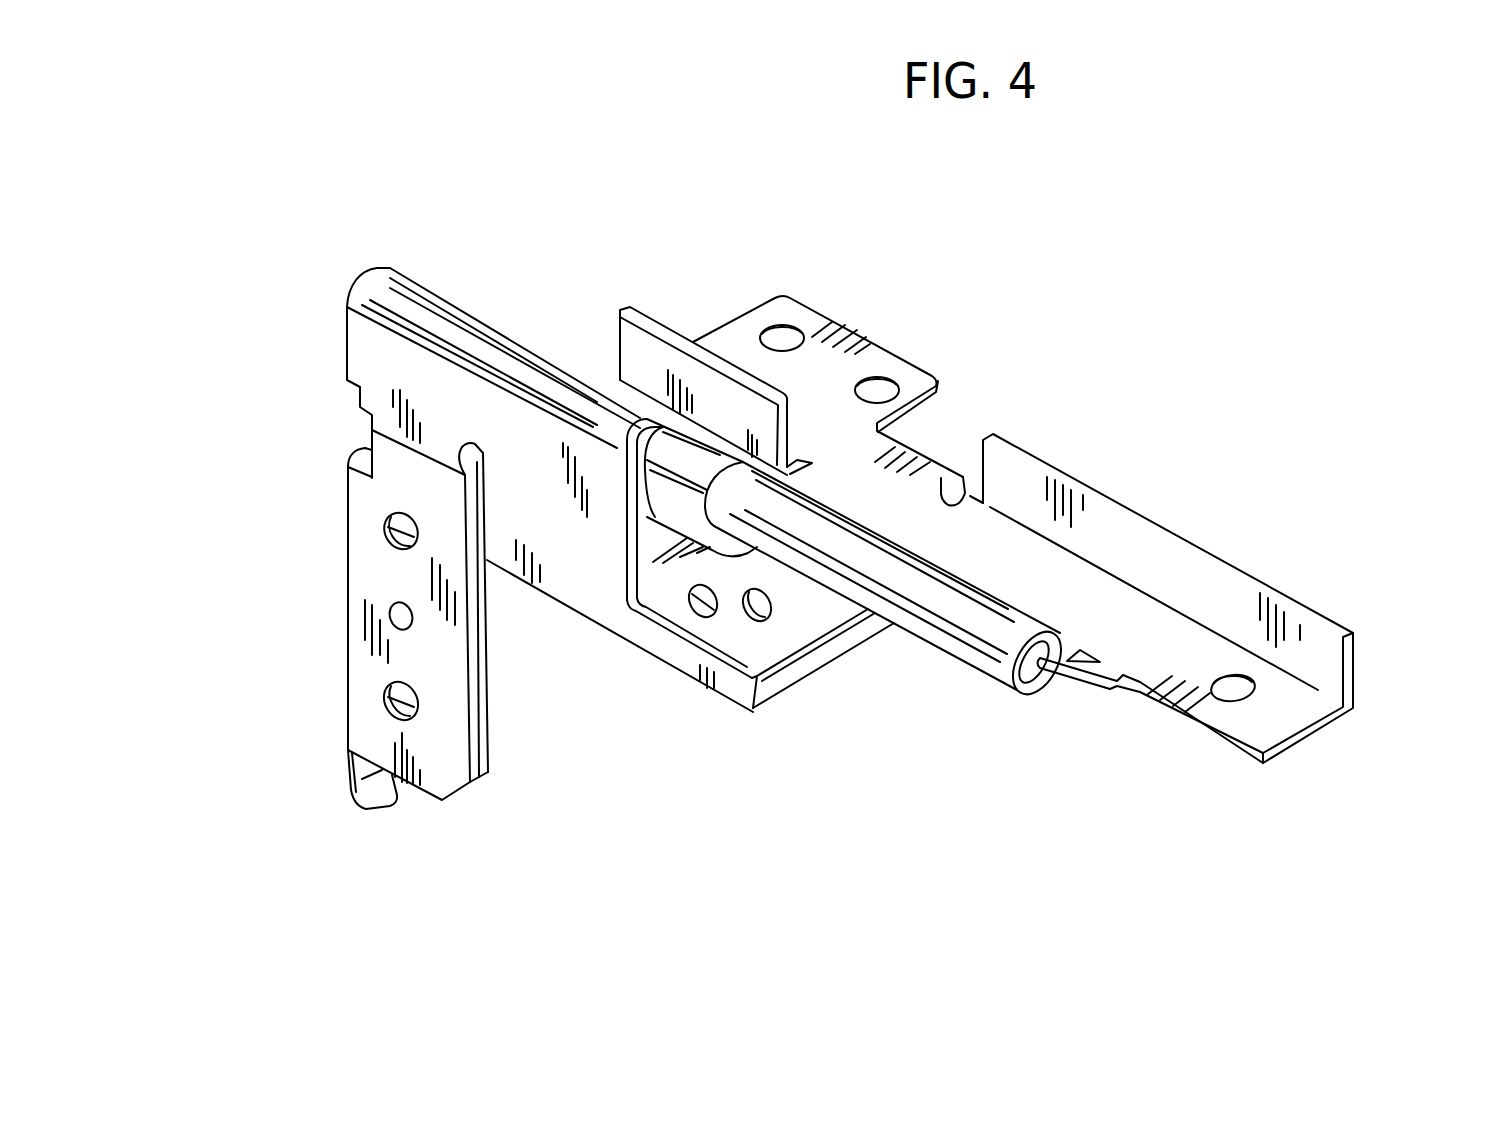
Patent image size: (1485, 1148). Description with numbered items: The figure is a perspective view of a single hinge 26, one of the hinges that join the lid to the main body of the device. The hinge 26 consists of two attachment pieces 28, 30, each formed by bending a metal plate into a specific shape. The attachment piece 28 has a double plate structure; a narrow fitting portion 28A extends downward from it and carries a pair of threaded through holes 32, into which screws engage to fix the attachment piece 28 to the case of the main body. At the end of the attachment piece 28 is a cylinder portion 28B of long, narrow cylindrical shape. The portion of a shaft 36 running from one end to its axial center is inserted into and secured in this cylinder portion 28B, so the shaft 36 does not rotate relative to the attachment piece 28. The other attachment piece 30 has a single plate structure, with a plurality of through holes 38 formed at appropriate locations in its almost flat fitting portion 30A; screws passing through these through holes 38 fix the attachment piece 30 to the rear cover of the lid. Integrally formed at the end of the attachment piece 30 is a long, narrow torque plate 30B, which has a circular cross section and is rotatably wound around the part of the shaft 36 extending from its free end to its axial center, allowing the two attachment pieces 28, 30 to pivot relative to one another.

The hinge 26 is at (1053, 343).
The attachment piece 28 is at (348, 598).
The fitting portion 28A is at (442, 760).
The cylinder portion 28B is at (413, 312).
The attachment piece 30 is at (1173, 530).
The fitting portion 30A is at (1140, 658).
The torque plate 30B is at (975, 627).
The threaded through holes 32 is at (397, 530).
The shaft 36 is at (1032, 673).
The through holes 38 is at (875, 400).